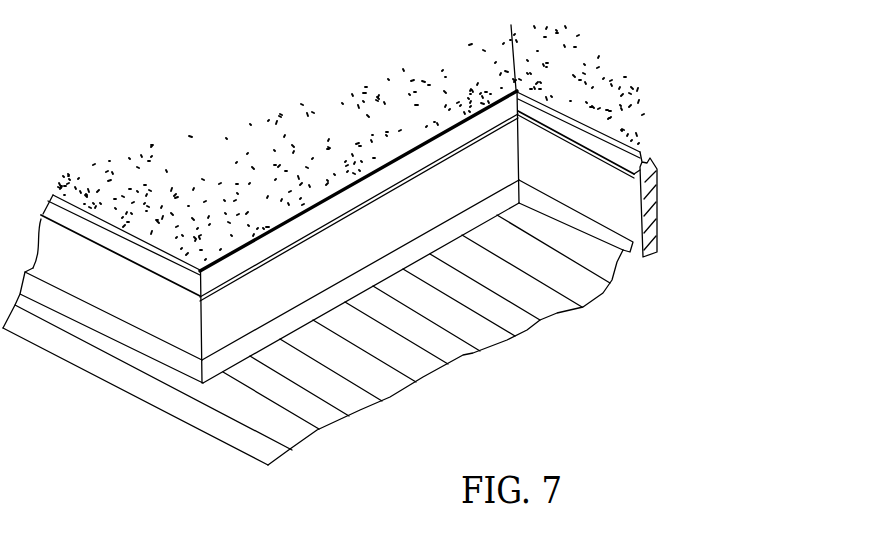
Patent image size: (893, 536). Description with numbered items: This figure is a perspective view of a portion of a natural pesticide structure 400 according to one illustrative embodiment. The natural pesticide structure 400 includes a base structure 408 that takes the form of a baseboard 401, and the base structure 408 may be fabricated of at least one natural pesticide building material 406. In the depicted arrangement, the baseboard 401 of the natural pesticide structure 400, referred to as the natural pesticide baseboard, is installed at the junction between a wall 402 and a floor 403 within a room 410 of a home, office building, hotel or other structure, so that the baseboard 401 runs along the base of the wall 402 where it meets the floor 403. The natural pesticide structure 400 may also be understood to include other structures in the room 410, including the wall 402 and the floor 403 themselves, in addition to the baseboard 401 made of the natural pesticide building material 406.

The natural pesticide structure 400 is at (672, 104).
The baseboard 401 is at (282, 268).
The wall 402 is at (353, 82).
The floor 403 is at (456, 343).
The natural pesticide building material 406 is at (430, 128).
The base structure 408 is at (160, 385).
The room 410 is at (787, 164).